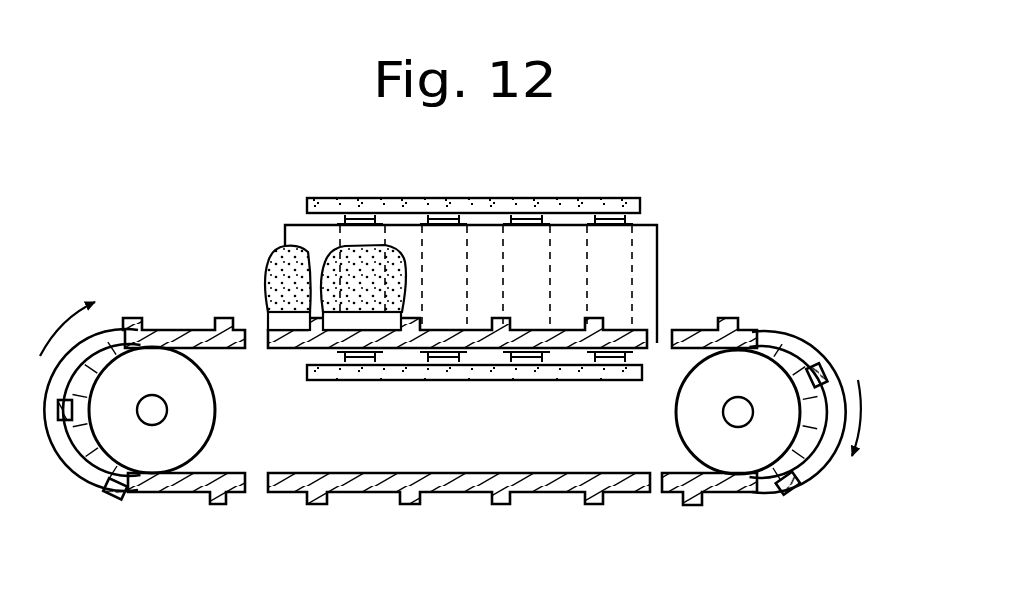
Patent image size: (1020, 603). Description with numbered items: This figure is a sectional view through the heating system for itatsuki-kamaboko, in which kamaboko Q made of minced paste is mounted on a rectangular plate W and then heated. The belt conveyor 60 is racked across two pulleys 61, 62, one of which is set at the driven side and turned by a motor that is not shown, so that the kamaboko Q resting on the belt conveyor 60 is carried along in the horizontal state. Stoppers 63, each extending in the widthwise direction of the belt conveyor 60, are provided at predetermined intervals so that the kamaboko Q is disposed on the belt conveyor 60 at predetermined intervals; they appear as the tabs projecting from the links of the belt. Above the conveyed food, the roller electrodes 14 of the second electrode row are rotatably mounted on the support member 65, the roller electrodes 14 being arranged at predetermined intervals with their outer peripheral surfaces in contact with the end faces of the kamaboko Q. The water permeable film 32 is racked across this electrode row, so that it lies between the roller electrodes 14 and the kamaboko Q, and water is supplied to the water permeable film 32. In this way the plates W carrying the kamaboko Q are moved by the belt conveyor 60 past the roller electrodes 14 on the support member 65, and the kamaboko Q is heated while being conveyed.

The belt conveyor 60 is at (773, 318).
The pulley 61 is at (208, 410).
The pulley 62 is at (690, 410).
The stopper 63 is at (610, 320).
The support member 65 is at (461, 205).
The water permeable film 32 is at (650, 232).
The roller electrode 14 is at (590, 250).
The rectangular plate W is at (333, 330).
The kamaboko Q is at (400, 250).